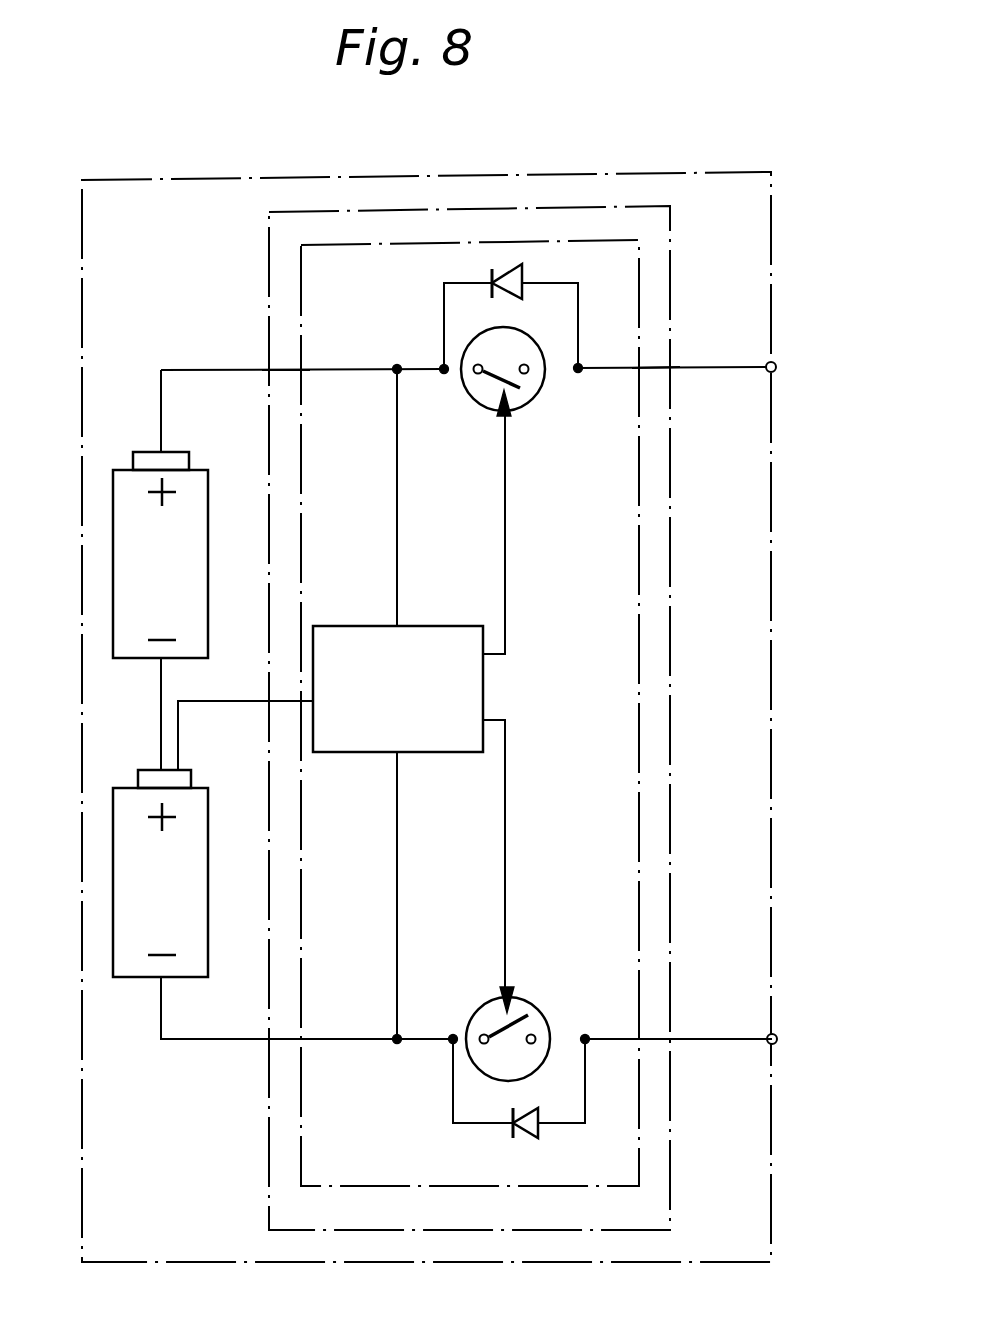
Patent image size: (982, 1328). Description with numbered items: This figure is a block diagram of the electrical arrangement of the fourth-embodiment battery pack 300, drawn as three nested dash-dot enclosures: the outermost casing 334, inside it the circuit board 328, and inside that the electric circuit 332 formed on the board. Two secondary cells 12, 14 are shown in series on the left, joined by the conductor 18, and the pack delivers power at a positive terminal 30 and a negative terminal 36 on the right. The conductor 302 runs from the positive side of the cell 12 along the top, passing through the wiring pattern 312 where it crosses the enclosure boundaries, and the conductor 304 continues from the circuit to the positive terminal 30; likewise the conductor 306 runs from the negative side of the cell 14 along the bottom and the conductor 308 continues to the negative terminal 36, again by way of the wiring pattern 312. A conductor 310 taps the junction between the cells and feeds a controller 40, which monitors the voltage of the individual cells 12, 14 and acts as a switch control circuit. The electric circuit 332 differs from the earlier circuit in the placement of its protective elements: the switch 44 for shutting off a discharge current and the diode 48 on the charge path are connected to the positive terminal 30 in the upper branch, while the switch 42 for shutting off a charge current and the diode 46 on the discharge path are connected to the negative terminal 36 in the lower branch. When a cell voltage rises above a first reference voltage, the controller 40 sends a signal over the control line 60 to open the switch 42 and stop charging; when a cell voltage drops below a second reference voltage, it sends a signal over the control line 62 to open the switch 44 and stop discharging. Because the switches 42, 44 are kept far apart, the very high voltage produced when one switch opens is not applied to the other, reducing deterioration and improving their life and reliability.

The battery pack 300 is at (870, 560).
The secondary cell 12 is at (208, 493).
The secondary cell 14 is at (236, 846).
The conductor 18 is at (161, 722).
The positive terminal 30 is at (774, 362).
The negative terminal 36 is at (775, 1034).
The controller 40 is at (420, 626).
The switch for shutting off a charge path 42 is at (527, 998).
The switch for shutting off a discharge path 44 is at (533, 398).
The diode for discharge 46 is at (515, 1138).
The diode for charge 48 is at (492, 271).
The control line 60 is at (505, 830).
The control line 62 is at (505, 572).
The conductor 302 is at (193, 370).
The conductor 304 is at (688, 367).
The conductor 306 is at (181, 1040).
The conductor 308 is at (683, 1040).
The conductor 310 is at (210, 703).
The wiring pattern 312 is at (323, 370).
The circuit board 328 is at (670, 722).
The electric circuit 332 is at (639, 545).
The casing 334 is at (772, 765).